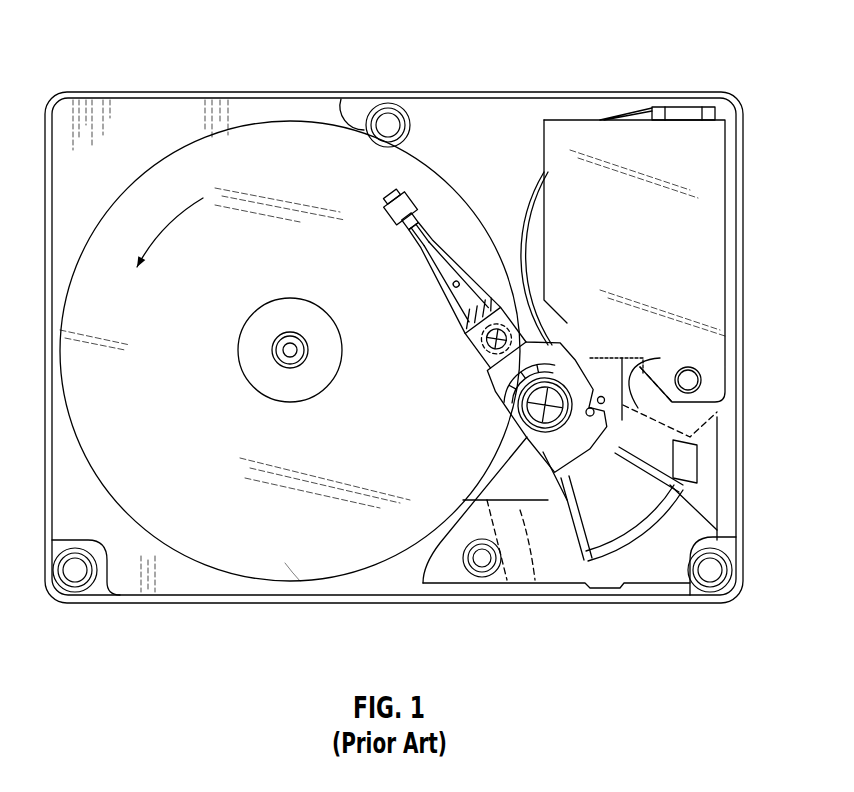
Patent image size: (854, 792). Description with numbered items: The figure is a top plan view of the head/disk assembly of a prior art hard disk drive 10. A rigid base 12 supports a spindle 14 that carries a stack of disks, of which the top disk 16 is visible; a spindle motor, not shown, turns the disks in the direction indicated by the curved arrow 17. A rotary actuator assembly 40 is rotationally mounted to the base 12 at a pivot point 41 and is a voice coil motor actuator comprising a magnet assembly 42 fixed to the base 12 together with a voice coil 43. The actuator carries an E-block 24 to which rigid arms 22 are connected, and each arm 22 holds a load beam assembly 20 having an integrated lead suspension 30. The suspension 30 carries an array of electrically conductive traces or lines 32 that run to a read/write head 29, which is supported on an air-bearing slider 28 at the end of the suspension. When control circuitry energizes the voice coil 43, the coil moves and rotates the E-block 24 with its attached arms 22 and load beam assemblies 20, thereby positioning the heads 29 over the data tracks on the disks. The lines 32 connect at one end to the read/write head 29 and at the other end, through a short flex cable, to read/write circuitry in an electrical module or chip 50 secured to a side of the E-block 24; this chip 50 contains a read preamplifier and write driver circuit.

The hard disk drive 10 is at (110, 33).
The rigid base 12 is at (187, 602).
The spindle 14 is at (290, 297).
The top disk 16 is at (422, 163).
The curved arrow 17 is at (172, 223).
The load beam assembly 20 is at (457, 328).
The rigid arm 22 is at (285, 563).
The E-block 24 is at (502, 397).
The air-bearing slider 28 is at (418, 192).
The read/write head 29 is at (397, 198).
The integrated lead suspension 30 is at (427, 227).
The electrically conductive traces 32 is at (443, 263).
The rotary actuator assembly 40 is at (500, 463).
The pivot point 41 is at (548, 398).
The magnet assembly 42 is at (673, 367).
The voice coil 43 is at (677, 483).
The electrical module or chip 50 is at (588, 362).